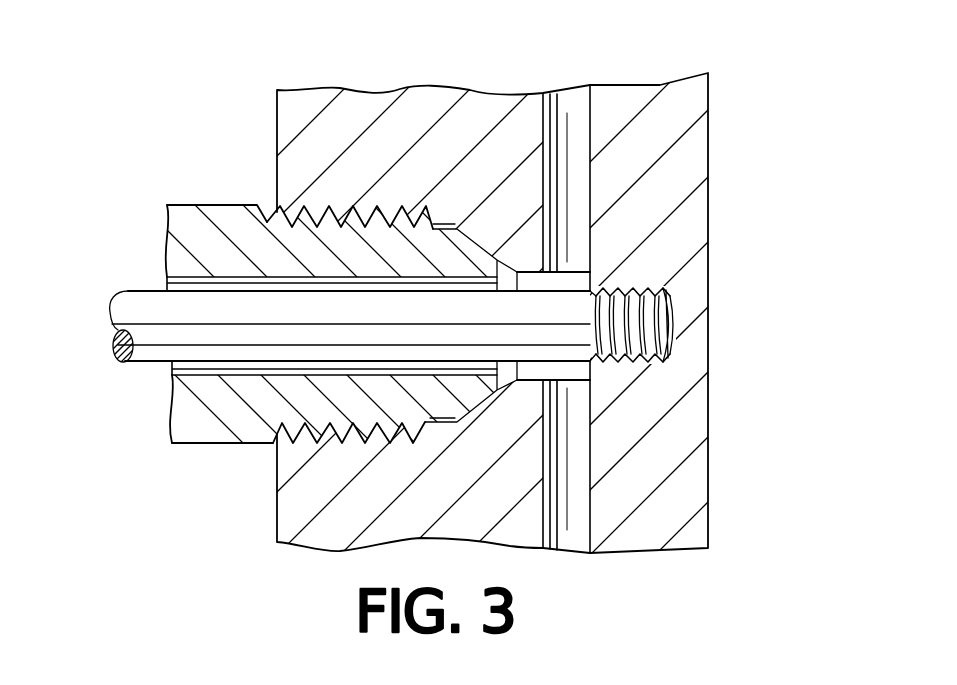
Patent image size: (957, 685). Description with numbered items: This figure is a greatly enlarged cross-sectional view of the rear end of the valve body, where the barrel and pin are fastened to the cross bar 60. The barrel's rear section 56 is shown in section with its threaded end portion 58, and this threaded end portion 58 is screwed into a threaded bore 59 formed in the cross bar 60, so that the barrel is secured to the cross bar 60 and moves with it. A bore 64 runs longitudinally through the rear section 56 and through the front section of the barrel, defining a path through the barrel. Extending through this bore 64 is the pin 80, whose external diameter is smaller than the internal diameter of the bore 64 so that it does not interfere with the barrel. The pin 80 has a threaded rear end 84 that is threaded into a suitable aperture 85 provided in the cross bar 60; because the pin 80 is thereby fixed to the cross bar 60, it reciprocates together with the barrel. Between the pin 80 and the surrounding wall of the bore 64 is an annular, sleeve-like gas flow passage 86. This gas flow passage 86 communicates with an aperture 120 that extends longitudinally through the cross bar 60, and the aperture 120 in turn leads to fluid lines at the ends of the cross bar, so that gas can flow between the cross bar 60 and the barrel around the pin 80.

The rear section 56 is at (183, 220).
The threaded end portion 58 is at (376, 205).
The threaded bore 59 is at (368, 430).
The bore 64 is at (225, 372).
The gas flow passage 86 is at (177, 285).
The pin 80 is at (168, 340).
The threaded rear end 84 is at (662, 286).
The aperture 85 is at (665, 346).
The cross bar 60 is at (668, 420).
The aperture 120 is at (585, 87).